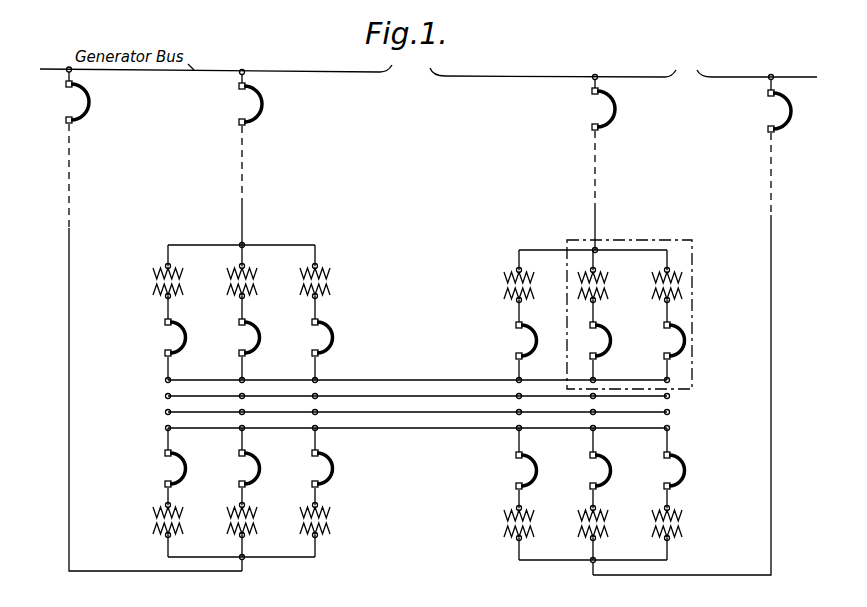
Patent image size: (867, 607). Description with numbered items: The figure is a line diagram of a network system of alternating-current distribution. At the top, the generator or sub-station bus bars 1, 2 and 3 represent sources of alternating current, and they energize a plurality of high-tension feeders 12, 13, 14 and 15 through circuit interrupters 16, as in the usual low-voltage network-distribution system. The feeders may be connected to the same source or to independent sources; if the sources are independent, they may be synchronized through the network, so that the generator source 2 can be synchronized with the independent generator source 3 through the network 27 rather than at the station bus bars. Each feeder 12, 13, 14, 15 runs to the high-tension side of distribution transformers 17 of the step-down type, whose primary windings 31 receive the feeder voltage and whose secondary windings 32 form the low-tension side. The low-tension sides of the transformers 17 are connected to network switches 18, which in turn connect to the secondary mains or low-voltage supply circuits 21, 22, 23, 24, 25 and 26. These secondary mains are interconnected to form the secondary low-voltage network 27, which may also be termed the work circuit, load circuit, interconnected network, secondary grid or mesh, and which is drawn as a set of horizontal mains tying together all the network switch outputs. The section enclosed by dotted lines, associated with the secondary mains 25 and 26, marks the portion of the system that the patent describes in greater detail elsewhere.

The generator bus bar 1 is at (365, 69).
The generator bus bar 2 is at (468, 70).
The generator bus bar 3 is at (733, 70).
The high-tension feeder 12 is at (69, 232).
The high-tension feeder 13 is at (242, 228).
The high-tension feeder 14 is at (595, 232).
The high-tension feeder 15 is at (771, 232).
The circuit interrupter 16 is at (85, 105).
The distribution transformer 17 is at (152, 281).
The network switch 18 is at (164, 336).
The secondary main 21 is at (170, 369).
The secondary main 22 is at (244, 369).
The secondary main 23 is at (317, 369).
The secondary main 24 is at (521, 372).
The secondary main 25 is at (595, 372).
The secondary main 26 is at (665, 372).
The low-voltage network 27 is at (145, 423).
The primary winding 31 is at (331, 275).
The secondary winding 32 is at (332, 291).